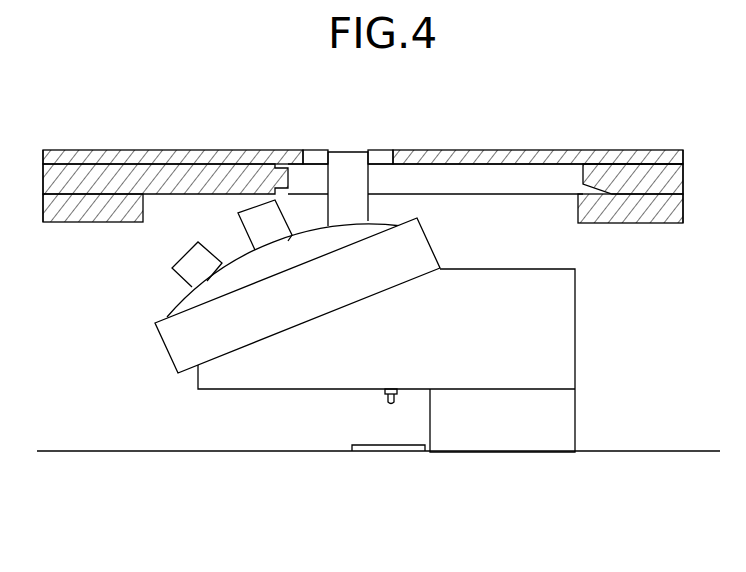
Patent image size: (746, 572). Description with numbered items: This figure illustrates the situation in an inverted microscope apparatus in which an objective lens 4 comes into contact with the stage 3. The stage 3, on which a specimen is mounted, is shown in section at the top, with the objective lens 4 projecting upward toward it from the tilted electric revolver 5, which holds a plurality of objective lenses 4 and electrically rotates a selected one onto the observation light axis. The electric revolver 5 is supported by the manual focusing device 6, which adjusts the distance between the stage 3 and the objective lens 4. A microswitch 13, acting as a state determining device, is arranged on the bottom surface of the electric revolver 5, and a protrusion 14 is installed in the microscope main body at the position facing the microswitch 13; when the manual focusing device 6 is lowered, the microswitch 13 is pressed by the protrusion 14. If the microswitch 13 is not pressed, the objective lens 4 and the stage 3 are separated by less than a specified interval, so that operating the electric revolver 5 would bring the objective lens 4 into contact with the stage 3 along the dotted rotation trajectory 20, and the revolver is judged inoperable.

The stage 3 is at (363, 150).
The rotation trajectory 20 is at (248, 182).
The objective lens 4 is at (346, 167).
The electric revolver 5 is at (200, 330).
The manual focusing device 6 is at (545, 417).
The microswitch 13 is at (400, 388).
The protrusion 14 is at (387, 448).